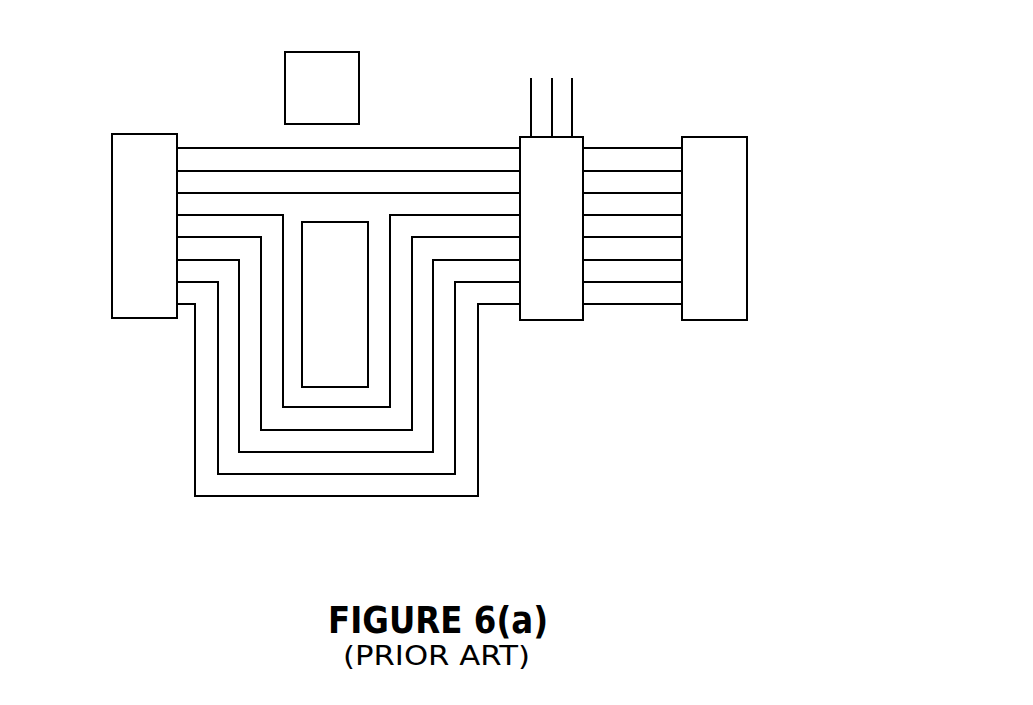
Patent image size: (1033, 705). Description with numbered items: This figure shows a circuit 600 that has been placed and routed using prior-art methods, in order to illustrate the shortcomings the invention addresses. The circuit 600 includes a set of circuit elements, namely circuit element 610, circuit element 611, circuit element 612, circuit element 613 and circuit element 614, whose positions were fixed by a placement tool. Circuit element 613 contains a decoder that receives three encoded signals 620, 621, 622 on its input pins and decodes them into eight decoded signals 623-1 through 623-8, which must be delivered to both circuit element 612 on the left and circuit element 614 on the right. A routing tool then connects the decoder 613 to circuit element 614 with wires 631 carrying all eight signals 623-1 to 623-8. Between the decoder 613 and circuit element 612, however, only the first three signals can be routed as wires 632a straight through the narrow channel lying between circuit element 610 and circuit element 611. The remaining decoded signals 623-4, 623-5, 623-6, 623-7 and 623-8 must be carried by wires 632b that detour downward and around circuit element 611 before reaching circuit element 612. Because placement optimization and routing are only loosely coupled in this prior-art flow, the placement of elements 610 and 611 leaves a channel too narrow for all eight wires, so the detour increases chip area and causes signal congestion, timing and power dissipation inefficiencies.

The circuit 600 is at (688, 38).
The circuit element 610 is at (341, 100).
The circuit element 611 is at (354, 318).
The circuit element 612 is at (164, 240).
The decoder 613 is at (571, 243).
The circuit element 614 is at (733, 243).
The encoded signal 620 is at (573, 93).
The encoded signal 621 is at (552, 92).
The encoded signal 622 is at (530, 93).
The decoded signal 623-1 is at (395, 142).
The decoded signal 623-4 is at (330, 506).
The decoded signal 623-5 is at (429, 333).
The decoded signal 623-6 is at (429, 356).
The decoded signal 623-7 is at (429, 378).
The decoded signal 623-8 is at (625, 140).
The wires 631 is at (651, 318).
The wires 632a is at (249, 118).
The wires 632b is at (177, 352).